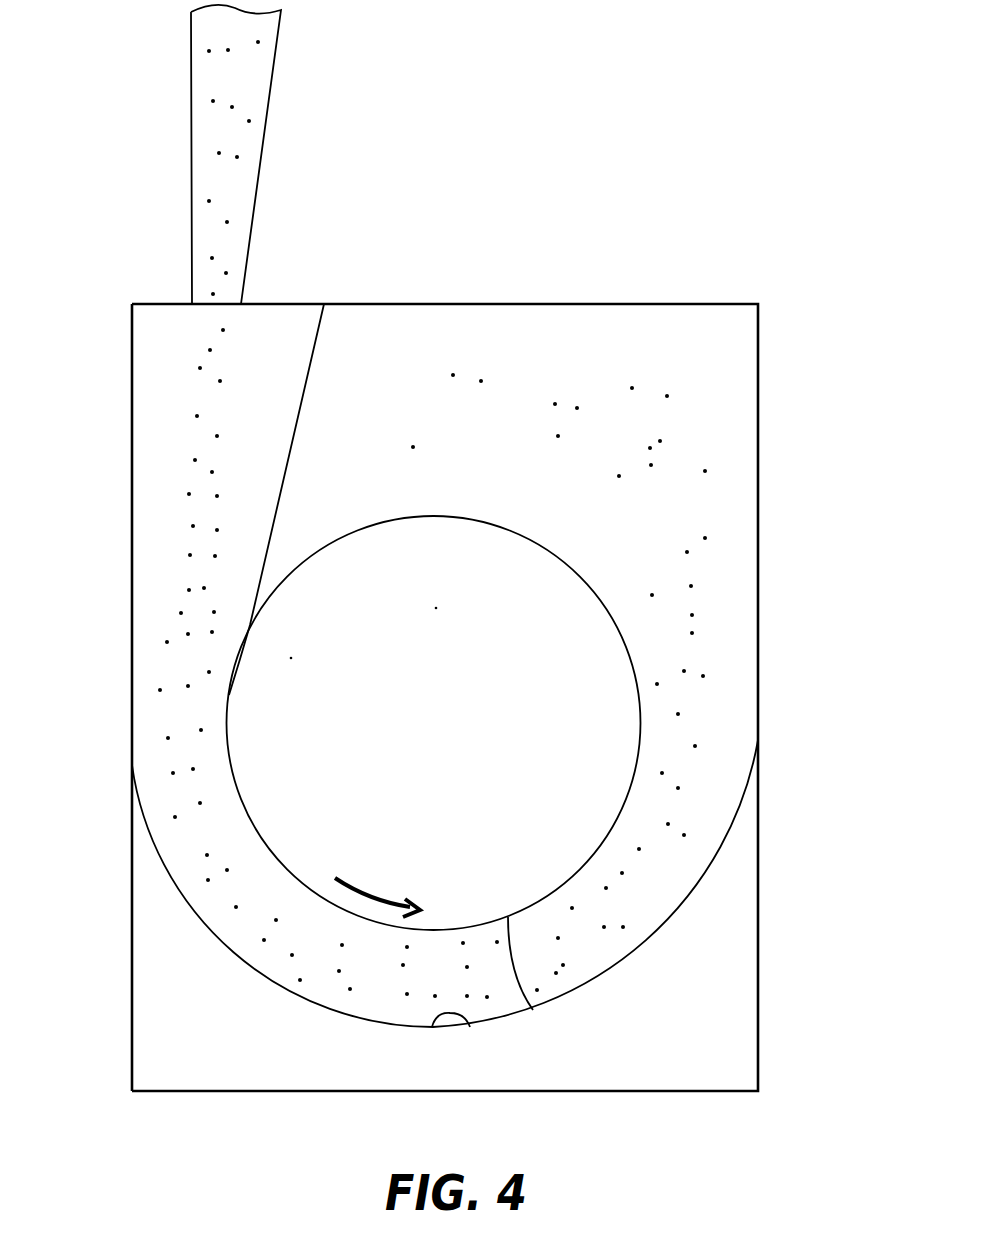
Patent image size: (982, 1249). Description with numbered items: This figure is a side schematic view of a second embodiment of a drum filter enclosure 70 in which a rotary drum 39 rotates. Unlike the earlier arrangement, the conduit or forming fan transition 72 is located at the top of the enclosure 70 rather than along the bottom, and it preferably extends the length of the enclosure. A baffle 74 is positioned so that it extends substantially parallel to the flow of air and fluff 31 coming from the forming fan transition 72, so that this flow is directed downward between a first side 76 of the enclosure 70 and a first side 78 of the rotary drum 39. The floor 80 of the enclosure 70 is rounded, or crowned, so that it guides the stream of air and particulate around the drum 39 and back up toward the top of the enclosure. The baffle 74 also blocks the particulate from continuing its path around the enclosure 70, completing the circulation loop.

The drum filter enclosure 70 is at (804, 679).
The air and fluff 31 is at (728, 729).
The forming fan transition 72 is at (248, 88).
The baffle 74 is at (292, 453).
The first side of the enclosure 76 is at (132, 623).
The first side of the rotary drum 78 is at (228, 755).
The rotary drum 39 is at (533, 1010).
The floor of the enclosure 80 is at (470, 1027).